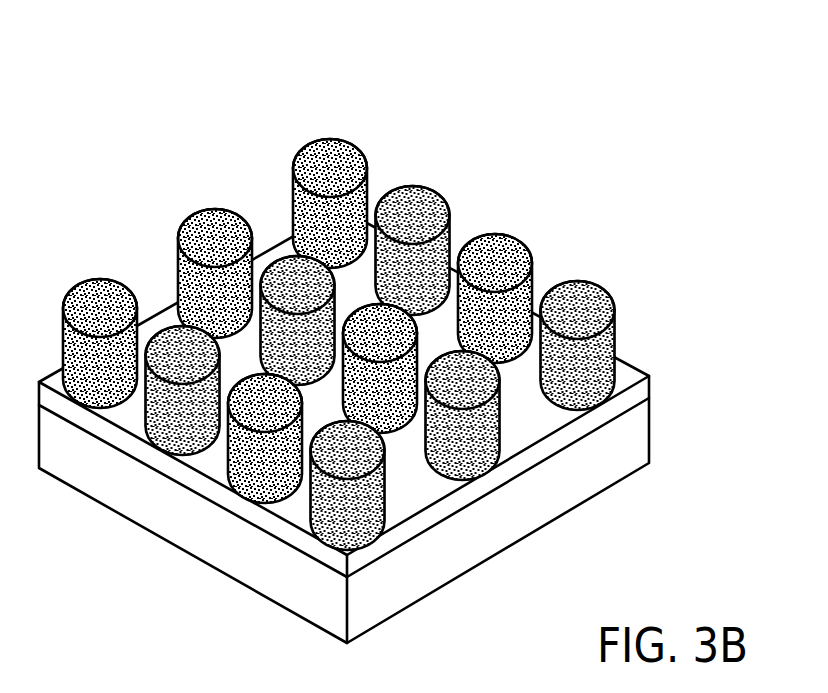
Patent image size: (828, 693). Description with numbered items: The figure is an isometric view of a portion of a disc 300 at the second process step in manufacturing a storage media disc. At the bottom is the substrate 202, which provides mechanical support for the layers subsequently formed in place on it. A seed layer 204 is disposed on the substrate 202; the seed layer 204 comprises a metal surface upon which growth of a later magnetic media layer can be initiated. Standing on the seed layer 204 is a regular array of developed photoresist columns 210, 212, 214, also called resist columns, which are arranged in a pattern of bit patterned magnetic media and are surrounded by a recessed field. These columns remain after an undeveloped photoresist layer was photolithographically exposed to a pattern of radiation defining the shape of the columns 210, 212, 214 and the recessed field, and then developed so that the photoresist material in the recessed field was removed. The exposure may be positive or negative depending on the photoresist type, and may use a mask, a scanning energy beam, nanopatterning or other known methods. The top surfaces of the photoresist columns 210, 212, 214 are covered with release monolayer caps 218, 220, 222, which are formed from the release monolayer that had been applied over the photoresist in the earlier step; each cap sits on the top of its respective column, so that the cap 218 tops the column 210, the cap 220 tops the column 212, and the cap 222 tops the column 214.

The disc 300 is at (427, 338).
The substrate 202 is at (652, 442).
The seed layer 204 is at (650, 380).
The photoresist column 210 is at (472, 192).
The photoresist column 212 is at (556, 254).
The photoresist column 214 is at (651, 314).
The release monolayer cap 218 is at (418, 192).
The release monolayer cap 220 is at (512, 233).
The release monolayer cap 222 is at (603, 288).